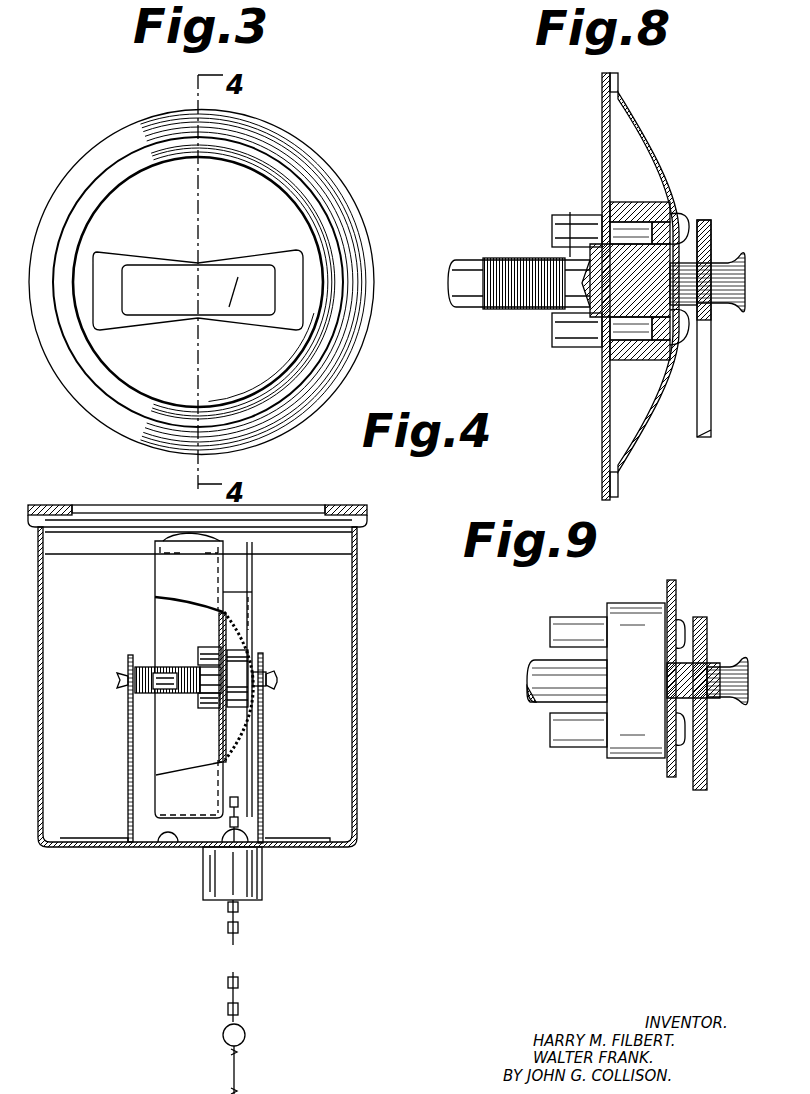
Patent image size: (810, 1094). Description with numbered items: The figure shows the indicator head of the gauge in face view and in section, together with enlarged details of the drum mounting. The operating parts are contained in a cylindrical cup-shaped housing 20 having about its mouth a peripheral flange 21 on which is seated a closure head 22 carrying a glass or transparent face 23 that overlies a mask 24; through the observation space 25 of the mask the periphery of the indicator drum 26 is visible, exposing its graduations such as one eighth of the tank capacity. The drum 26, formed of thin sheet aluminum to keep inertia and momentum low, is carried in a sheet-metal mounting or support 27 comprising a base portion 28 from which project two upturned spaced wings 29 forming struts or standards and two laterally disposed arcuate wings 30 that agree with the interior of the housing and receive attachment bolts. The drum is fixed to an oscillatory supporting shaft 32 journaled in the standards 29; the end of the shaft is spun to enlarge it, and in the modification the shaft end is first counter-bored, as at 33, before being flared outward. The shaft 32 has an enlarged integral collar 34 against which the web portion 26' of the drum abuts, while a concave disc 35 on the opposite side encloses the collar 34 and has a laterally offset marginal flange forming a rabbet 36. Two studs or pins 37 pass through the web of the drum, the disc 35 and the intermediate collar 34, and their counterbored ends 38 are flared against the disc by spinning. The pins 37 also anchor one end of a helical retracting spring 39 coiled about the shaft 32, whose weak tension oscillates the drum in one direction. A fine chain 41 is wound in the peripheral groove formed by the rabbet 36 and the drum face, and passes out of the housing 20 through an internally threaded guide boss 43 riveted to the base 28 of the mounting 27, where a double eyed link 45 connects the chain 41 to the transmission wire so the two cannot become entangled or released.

In FIG. 4, the cup-shaped housing 20 is at (357, 690).
In FIG. 4, the peripheral flange 21 is at (367, 524).
In FIG. 3, the closure head 22 is at (325, 193).
In FIG. 4, the closure head 22 is at (335, 508).
In FIG. 4, the glass or transparent face 23 is at (282, 525).
In FIG. 3, the mask 24 is at (204, 282).
In FIG. 4, the mask 24 is at (120, 533).
In FIG. 3, the observation space 25 is at (283, 260).
In FIG. 3, the indicator drum 26 is at (198, 320).
In FIG. 4, the indicator drum 26 is at (158, 675).
In FIG. 4, the web portion of the drum 26' is at (202, 687).
In FIG. 8, the web portion of the drum 26' is at (586, 286).
In FIG. 4, the mounting or support 27 is at (128, 886).
In FIG. 4, the base portion 28 is at (252, 843).
In FIG. 4, the upturned spaced wings 29 is at (250, 762).
In FIG. 8, the upturned spaced wings 29 is at (712, 382).
In FIG. 9, the upturned spaced wings 29 is at (710, 768).
In FIG. 4, the arcuate wings 30 is at (95, 832).
In FIG. 4, the supporting shaft 32 is at (170, 690).
In FIG. 8, the supporting shaft 32 is at (473, 307).
In FIG. 9, the supporting shaft 32 is at (540, 703).
In FIG. 9, the counter-bore 33 is at (724, 684).
In FIG. 4, the integral collar 34 is at (235, 645).
In FIG. 8, the integral collar 34 is at (640, 202).
In FIG. 9, the integral collar 34 is at (637, 603).
In FIG. 4, the concave disc 35 is at (242, 720).
In FIG. 8, the concave disc 35 is at (647, 448).
In FIG. 4, the rabbet 36 is at (235, 562).
In FIG. 4, the studs or pins 37 is at (200, 650).
In FIG. 8, the studs or pins 37 is at (555, 216).
In FIG. 9, the studs or pins 37 is at (567, 615).
In FIG. 8, the counterbored ends 38 is at (688, 222).
In FIG. 4, the helical retracting spring 39 is at (140, 682).
In FIG. 8, the helical retracting spring 39 is at (518, 258).
In FIG. 4, the chain 41 is at (243, 931).
In FIG. 4, the guide boss 43 is at (262, 880).
In FIG. 4, the double eyed link 45 is at (240, 1062).